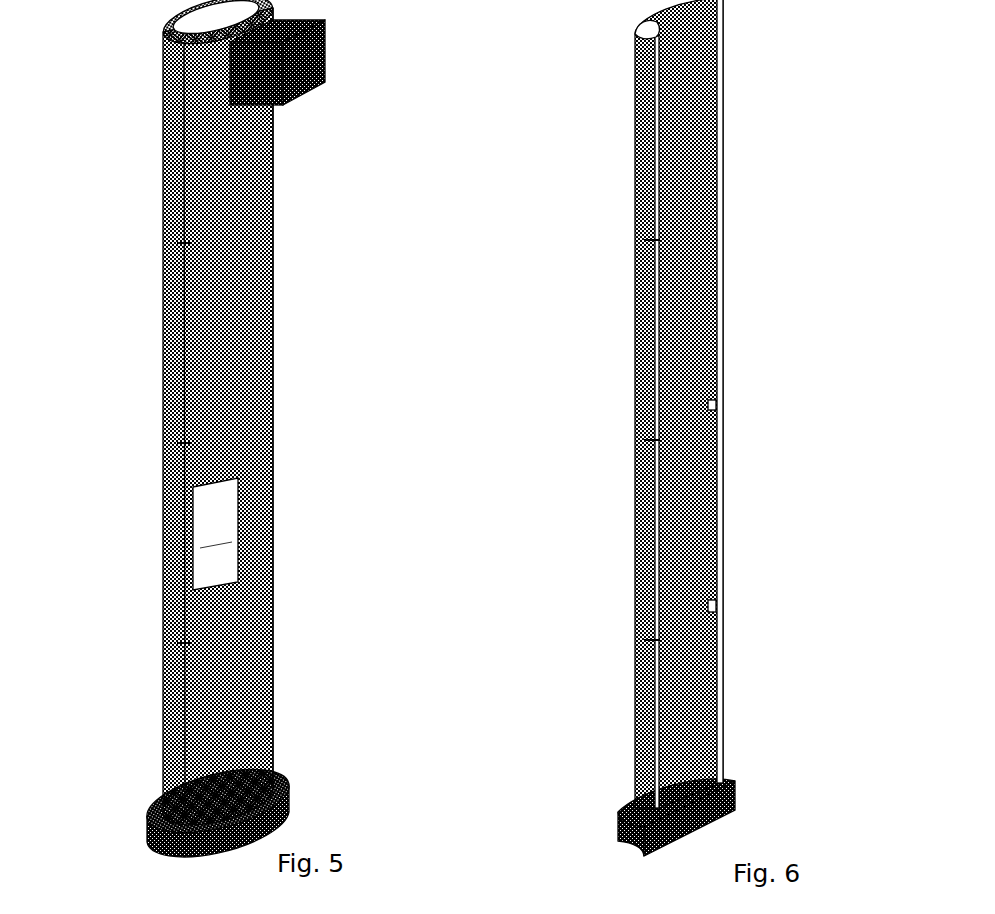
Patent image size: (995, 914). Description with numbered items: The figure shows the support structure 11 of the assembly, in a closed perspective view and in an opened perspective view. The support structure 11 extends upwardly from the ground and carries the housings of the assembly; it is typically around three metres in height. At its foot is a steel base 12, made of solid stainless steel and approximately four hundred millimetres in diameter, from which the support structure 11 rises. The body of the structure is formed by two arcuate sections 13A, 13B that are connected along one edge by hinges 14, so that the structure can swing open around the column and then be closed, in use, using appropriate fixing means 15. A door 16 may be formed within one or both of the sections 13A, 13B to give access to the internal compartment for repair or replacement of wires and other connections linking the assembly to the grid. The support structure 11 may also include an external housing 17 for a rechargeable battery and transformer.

In FIG. 5, the support structure 11 is at (235, 335).
In FIG. 5, the steel base 12 is at (220, 825).
In FIG. 6, the steel base 12 is at (736, 800).
In FIG. 5, the arcuate section 13A is at (170, 298).
In FIG. 6, the arcuate section 13A is at (708, 333).
In FIG. 5, the arcuate section 13B is at (245, 258).
In FIG. 6, the hinges 14 is at (708, 402).
In FIG. 5, the fixing means 15 is at (185, 443).
In FIG. 5, the door 16 is at (220, 518).
In FIG. 5, the external housing 17 is at (250, 62).